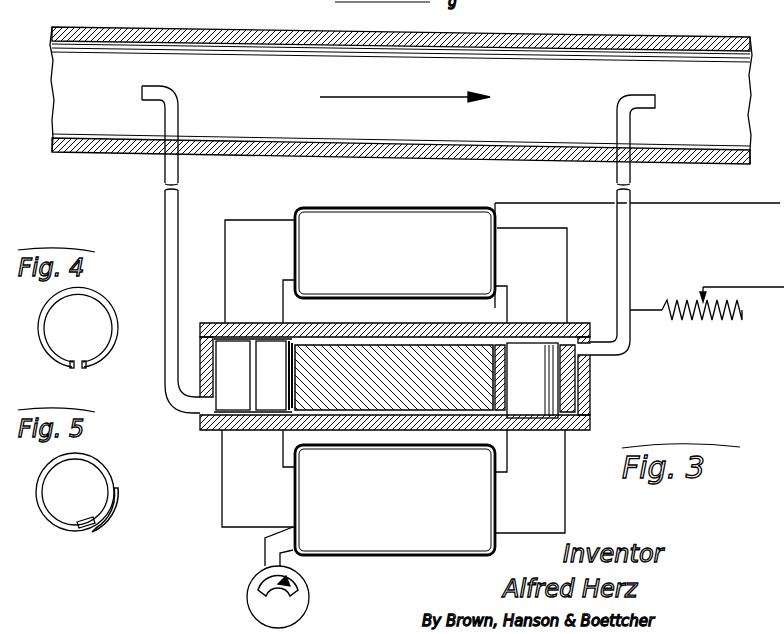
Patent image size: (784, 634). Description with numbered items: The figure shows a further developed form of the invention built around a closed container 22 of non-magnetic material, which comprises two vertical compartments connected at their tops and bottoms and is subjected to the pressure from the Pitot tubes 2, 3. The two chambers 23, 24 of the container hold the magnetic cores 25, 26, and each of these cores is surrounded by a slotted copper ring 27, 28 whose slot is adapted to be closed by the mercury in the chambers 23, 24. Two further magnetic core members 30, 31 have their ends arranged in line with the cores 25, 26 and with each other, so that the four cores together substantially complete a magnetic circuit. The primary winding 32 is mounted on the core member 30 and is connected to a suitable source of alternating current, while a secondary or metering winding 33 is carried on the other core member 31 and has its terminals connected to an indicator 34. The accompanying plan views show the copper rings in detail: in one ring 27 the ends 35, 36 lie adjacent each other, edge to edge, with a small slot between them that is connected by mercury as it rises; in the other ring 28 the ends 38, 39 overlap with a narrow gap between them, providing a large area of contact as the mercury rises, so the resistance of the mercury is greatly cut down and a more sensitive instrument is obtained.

In FIG. 3, the Pitot tube 2 is at (179, 103).
In FIG. 3, the Pitot tube 3 is at (617, 117).
In FIG. 3, the closed container 22 is at (590, 394).
In FIG. 3, the chamber 23 is at (214, 300).
In FIG. 3, the chamber 24 is at (605, 305).
In FIG. 3, the magnetic core 25 is at (252, 382).
In FIG. 3, the magnetic core 26 is at (537, 386).
In FIG. 3, the slotted copper ring 27 is at (230, 348).
In FIG. 4, the slotted copper ring 27 is at (48, 306).
In FIG. 3, the slotted copper ring 28 is at (575, 412).
In FIG. 5, the slotted copper ring 28 is at (60, 532).
In FIG. 3, the magnetic core member 30 is at (276, 206).
In FIG. 3, the magnetic core member 31 is at (250, 489).
In FIG. 3, the primary winding 32 is at (374, 228).
In FIG. 3, the secondary or metering winding 33 is at (406, 515).
In FIG. 3, the indicator 34 is at (276, 596).
In FIG. 4, the ring end 35 is at (71, 368).
In FIG. 4, the ring end 36 is at (85, 368).
In FIG. 5, the ring end 38 is at (93, 518).
In FIG. 5, the ring end 39 is at (97, 531).